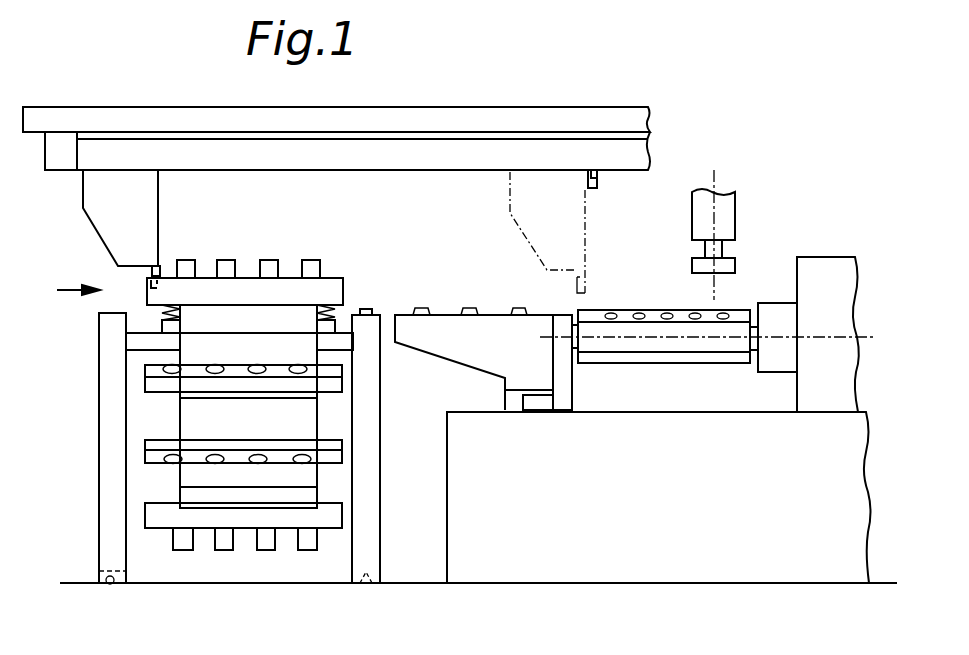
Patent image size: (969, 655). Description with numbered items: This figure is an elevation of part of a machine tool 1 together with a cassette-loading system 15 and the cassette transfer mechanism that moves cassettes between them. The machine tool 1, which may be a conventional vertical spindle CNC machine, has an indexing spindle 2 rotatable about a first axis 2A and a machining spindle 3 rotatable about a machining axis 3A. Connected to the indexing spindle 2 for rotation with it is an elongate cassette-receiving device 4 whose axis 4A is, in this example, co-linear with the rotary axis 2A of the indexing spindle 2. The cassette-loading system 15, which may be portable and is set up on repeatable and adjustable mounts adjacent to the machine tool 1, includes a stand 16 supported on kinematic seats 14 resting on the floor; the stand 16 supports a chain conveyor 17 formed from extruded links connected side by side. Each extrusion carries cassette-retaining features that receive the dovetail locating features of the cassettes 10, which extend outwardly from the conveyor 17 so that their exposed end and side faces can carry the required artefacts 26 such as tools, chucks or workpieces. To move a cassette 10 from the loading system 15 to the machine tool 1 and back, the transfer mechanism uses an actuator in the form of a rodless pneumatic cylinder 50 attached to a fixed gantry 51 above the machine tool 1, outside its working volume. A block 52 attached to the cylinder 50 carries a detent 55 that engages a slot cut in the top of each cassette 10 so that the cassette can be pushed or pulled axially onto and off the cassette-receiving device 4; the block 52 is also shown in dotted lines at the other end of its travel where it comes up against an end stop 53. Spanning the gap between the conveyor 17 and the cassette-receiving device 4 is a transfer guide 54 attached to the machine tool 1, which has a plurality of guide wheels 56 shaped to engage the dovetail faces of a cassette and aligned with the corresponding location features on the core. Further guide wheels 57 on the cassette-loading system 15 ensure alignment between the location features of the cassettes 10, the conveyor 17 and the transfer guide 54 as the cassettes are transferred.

The machine tool 1 is at (660, 571).
The indexing spindle 2 is at (778, 313).
The first axis 2A is at (826, 336).
The machining spindle 3 is at (728, 215).
The machining axis 3A is at (714, 298).
The cassette-receiving device 4 is at (652, 345).
The axis of the cassette-receiving device 4A is at (597, 291).
The cassette 10 is at (331, 290).
The kinematic seats 14 is at (110, 590).
The cassette-loading system 15 is at (61, 292).
The stand 16 is at (113, 463).
The chain conveyor 17 is at (203, 423).
The artefacts 26 is at (310, 263).
The rodless pneumatic cylinder 50 is at (497, 158).
The fixed gantry 51 is at (606, 118).
The block 52 is at (108, 214).
The end stop 53 is at (598, 187).
The transfer guide 54 is at (465, 345).
The detent 55 is at (160, 270).
The guide wheels 56 is at (517, 307).
The guide wheels 57 is at (365, 307).